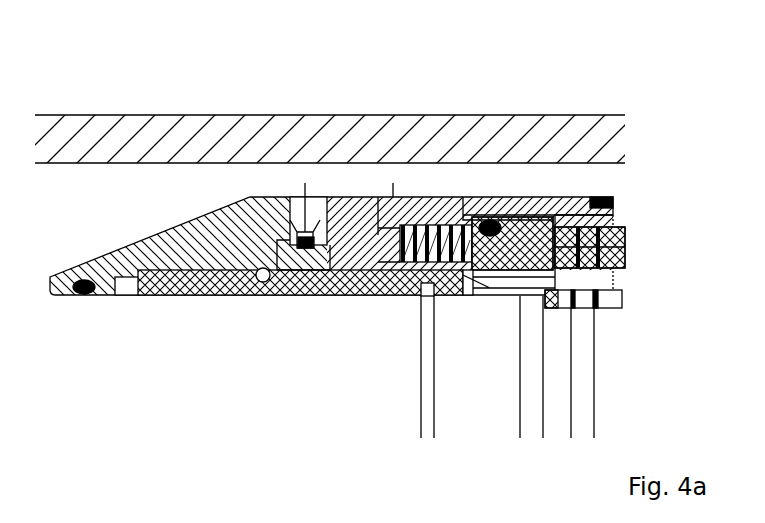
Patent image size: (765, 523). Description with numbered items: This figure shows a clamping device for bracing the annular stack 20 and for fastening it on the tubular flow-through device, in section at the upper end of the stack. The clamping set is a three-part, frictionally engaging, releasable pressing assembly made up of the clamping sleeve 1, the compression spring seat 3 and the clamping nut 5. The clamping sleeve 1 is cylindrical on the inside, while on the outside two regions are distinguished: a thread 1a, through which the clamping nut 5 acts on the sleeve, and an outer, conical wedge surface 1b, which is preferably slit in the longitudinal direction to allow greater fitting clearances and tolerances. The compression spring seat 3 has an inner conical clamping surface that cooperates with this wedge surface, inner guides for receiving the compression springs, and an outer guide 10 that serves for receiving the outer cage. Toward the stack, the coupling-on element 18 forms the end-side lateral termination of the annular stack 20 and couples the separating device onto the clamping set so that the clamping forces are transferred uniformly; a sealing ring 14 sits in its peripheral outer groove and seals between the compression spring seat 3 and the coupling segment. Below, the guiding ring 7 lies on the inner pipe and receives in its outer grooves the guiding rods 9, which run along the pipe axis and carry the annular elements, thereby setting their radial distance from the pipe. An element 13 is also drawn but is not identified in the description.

The clamping sleeve 1 is at (345, 287).
The thread 1a is at (185, 225).
The conical wedge surface 1b is at (338, 237).
The compression spring seat 3 is at (280, 283).
The clamping nut 5 is at (190, 292).
The guiding ring 7 is at (550, 312).
The guiding rod 9 is at (575, 282).
The outer guide 10 is at (585, 198).
The channel 13 is at (388, 293).
The sealing ring 14 is at (427, 305).
The coupling-on element 18 is at (613, 200).
The annular stack 20 is at (626, 247).